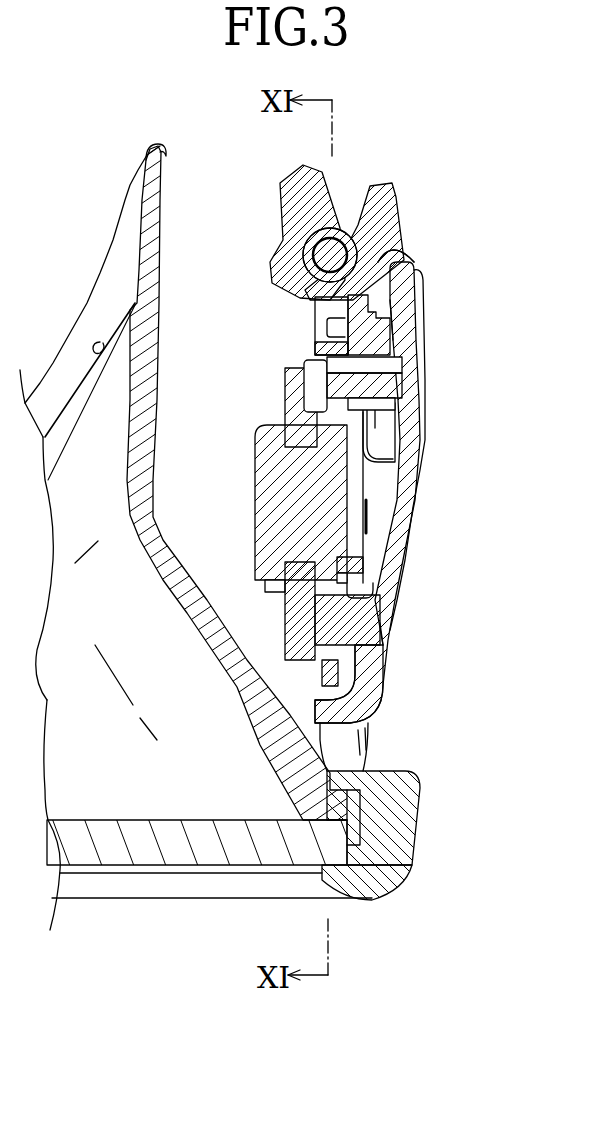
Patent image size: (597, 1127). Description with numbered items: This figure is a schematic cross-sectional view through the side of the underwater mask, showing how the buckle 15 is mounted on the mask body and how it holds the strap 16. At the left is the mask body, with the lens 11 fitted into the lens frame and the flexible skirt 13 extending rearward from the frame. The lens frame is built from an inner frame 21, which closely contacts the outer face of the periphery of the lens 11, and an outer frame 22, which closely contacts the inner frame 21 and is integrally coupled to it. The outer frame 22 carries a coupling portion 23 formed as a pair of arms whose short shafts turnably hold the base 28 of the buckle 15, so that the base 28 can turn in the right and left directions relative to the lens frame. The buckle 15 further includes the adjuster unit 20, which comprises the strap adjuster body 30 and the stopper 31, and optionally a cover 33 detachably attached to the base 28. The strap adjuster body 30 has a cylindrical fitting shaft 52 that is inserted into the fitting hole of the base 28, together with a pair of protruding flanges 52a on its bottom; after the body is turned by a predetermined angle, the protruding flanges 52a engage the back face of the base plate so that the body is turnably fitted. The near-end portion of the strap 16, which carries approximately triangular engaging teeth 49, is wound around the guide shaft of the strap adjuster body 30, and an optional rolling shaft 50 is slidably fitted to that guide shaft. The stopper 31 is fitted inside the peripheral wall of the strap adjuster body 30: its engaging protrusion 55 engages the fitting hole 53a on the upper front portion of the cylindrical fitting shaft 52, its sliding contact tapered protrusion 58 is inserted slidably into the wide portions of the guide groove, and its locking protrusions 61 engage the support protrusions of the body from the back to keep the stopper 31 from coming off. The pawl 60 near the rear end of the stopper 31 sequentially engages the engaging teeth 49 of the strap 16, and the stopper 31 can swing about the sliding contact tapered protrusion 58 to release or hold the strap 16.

The lens 11 is at (96, 840).
The skirt 13 is at (190, 578).
The buckle 15 is at (447, 493).
The strap 16 is at (378, 213).
The adjuster unit 20 is at (472, 520).
The inner frame 21 is at (372, 888).
The outer frame 22 is at (410, 835).
The coupling portion 23 is at (355, 745).
The base 28 is at (312, 583).
The strap adjuster body 30 is at (332, 537).
The stopper 31 is at (410, 540).
The cover 33 is at (373, 690).
The engaging teeth 49 is at (283, 217).
The rolling shaft 50 is at (334, 227).
The cylindrical fitting shaft 52 is at (295, 492).
The protruding flange 52a is at (265, 437).
The fitting hole 53a is at (380, 640).
The engaging protrusion 55 is at (330, 607).
The sliding contact tapered protrusion 58 is at (367, 383).
The pawl 60 is at (355, 312).
The locking protrusion 61 is at (333, 327).